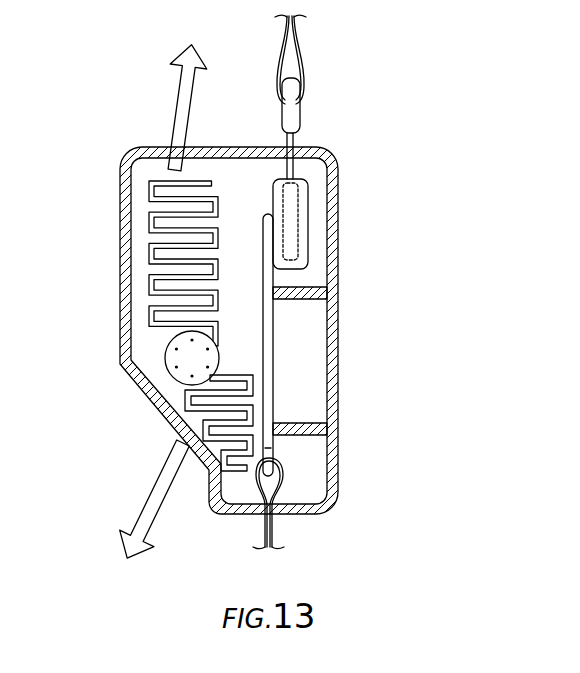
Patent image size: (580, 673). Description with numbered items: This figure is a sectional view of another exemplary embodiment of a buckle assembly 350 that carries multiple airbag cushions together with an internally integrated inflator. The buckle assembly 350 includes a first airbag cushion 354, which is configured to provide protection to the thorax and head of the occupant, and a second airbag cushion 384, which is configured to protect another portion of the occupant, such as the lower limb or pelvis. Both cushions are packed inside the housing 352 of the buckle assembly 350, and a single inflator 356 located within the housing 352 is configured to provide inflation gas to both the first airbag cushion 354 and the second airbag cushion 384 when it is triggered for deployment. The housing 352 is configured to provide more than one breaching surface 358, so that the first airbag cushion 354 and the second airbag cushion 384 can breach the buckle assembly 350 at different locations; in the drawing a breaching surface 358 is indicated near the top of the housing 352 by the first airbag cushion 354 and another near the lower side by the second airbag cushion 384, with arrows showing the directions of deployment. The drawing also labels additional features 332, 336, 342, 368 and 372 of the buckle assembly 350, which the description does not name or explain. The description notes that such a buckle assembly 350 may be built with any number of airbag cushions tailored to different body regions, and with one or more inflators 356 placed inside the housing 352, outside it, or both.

The tether cable 332 is at (298, 55).
The tether loop 336 is at (262, 530).
The connector block 342 is at (300, 115).
The buckle assembly 350 is at (88, 314).
The housing 352 is at (120, 366).
The first airbag cushion 354 is at (148, 232).
The inflator 356 is at (177, 380).
The breaching surface 358 is at (233, 147).
The conduit 368 is at (274, 360).
The reservoir 372 is at (310, 232).
The second airbag cushion 384 is at (231, 473).